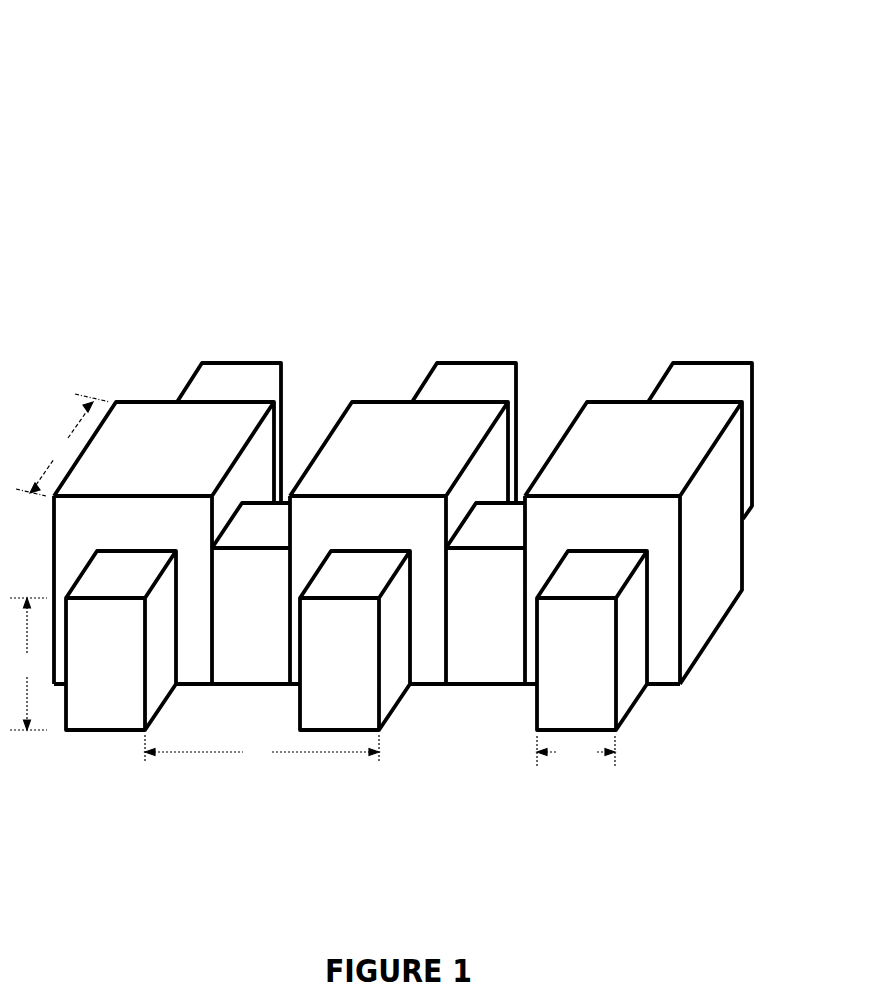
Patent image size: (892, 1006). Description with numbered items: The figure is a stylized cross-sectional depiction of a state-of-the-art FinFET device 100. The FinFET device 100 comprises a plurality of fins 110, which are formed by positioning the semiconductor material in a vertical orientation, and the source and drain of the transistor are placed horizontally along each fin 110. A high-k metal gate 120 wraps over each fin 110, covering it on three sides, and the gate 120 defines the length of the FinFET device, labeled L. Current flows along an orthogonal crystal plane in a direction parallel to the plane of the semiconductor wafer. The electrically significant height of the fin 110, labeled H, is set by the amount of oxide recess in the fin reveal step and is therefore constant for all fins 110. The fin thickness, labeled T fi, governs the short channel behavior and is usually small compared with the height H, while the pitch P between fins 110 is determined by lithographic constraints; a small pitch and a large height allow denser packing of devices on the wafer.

The FinFET device 100 is at (393, 399).
The fins 110 is at (243, 360).
The high-k metal gate 120 is at (338, 413).